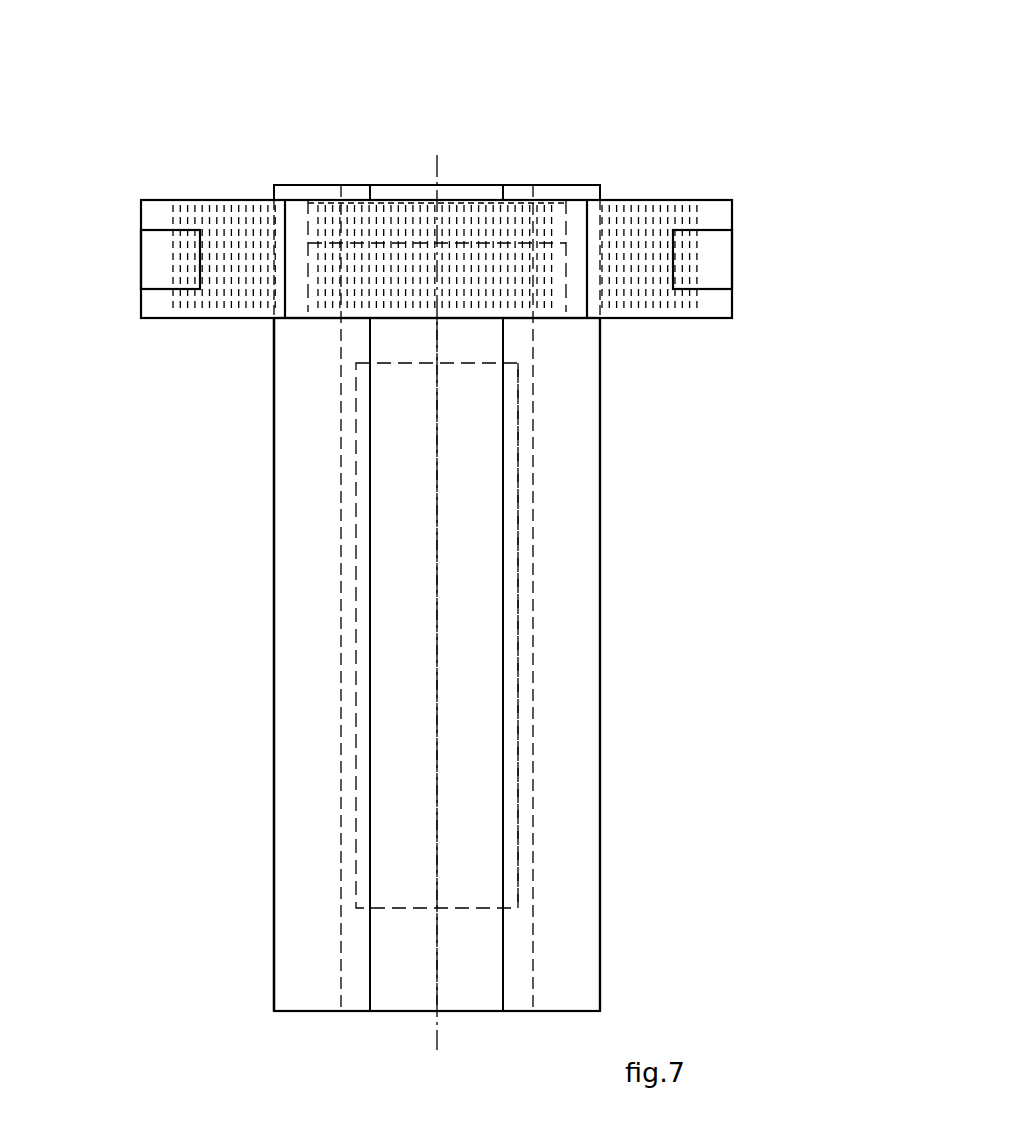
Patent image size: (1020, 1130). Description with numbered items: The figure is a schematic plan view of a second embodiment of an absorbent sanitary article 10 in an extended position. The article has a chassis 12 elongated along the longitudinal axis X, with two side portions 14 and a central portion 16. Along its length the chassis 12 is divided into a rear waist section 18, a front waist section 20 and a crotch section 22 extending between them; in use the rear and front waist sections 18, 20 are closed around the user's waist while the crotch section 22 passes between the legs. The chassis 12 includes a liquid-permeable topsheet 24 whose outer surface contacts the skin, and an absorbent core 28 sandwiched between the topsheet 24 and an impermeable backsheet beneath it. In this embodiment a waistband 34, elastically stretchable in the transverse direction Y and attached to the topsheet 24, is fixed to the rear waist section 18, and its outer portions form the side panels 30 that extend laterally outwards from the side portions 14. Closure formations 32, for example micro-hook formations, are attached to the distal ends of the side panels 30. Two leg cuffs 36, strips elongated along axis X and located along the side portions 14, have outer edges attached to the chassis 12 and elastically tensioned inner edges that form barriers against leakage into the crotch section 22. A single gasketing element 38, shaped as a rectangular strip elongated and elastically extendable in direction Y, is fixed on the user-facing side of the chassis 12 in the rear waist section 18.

The absorbent sanitary article 10 is at (151, 85).
The chassis 12 is at (458, 664).
The side portions 14 is at (299, 603).
The central portion 16 is at (437, 441).
The rear waist section 18 is at (264, 326).
The front waist section 20 is at (263, 984).
The crotch section 22 is at (263, 689).
The topsheet 24 is at (480, 850).
The absorbent core 28 is at (518, 759).
The side panels 30 is at (168, 200).
The closure formations 32 is at (170, 257).
The waistband 34 is at (298, 187).
The leg cuffs 36 is at (299, 505).
The gasketing element 38 is at (520, 191).